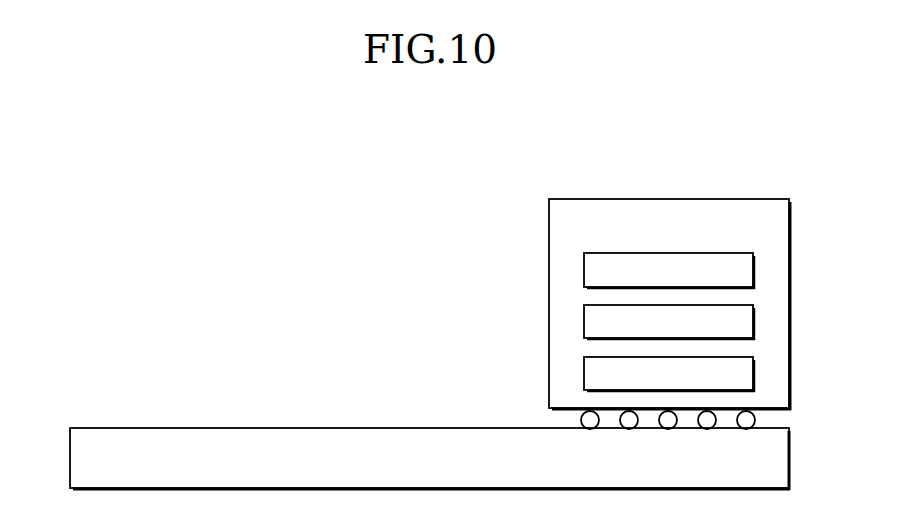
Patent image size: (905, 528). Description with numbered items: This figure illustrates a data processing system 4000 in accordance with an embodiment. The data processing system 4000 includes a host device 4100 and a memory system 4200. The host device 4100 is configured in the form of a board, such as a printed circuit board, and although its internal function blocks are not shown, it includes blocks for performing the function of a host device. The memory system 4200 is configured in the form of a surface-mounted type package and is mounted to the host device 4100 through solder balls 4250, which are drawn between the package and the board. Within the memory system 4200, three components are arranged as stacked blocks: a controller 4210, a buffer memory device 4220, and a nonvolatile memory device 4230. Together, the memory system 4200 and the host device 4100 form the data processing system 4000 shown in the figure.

The data processing system 4000 is at (165, 167).
The host device 4100 is at (430, 459).
The memory system 4200 is at (670, 304).
The controller 4210 is at (669, 271).
The buffer memory device 4220 is at (669, 322).
The nonvolatile memory device 4230 is at (669, 374).
The solder balls 4250 is at (766, 420).